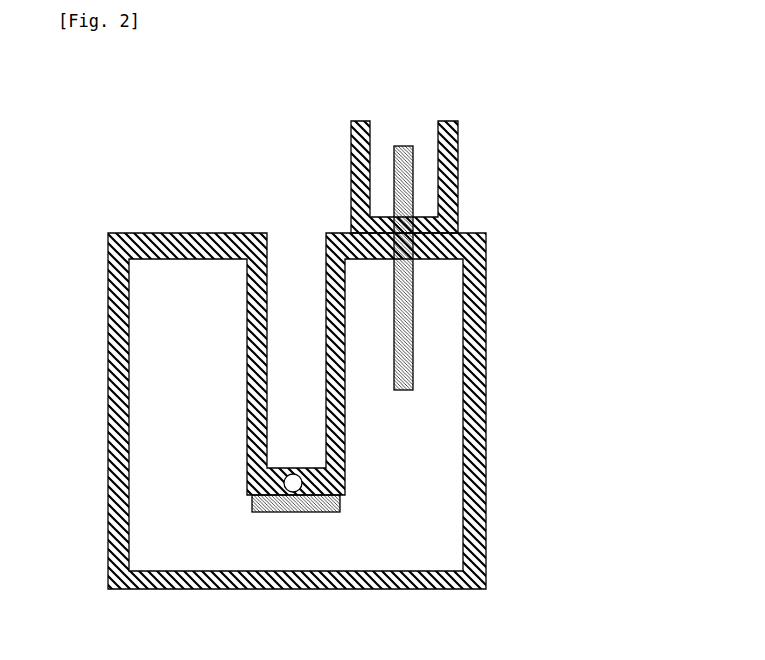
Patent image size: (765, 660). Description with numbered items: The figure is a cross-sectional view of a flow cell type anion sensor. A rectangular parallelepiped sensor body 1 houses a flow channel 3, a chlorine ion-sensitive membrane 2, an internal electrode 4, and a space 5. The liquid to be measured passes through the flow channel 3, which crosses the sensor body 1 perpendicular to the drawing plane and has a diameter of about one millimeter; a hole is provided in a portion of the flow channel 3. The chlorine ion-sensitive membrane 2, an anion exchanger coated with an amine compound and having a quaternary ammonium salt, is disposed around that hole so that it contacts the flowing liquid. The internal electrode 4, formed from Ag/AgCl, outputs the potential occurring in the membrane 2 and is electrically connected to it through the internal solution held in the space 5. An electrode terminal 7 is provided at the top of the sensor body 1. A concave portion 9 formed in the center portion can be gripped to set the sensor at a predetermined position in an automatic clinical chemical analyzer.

The sensor body 1 is at (473, 330).
The chlorine ion-sensitive membrane 2 is at (342, 497).
The flow channel 3 is at (305, 470).
The internal electrode 4 is at (402, 322).
The space 5 is at (202, 543).
The electrode terminal 7 is at (457, 137).
The concave portion 9 is at (278, 403).